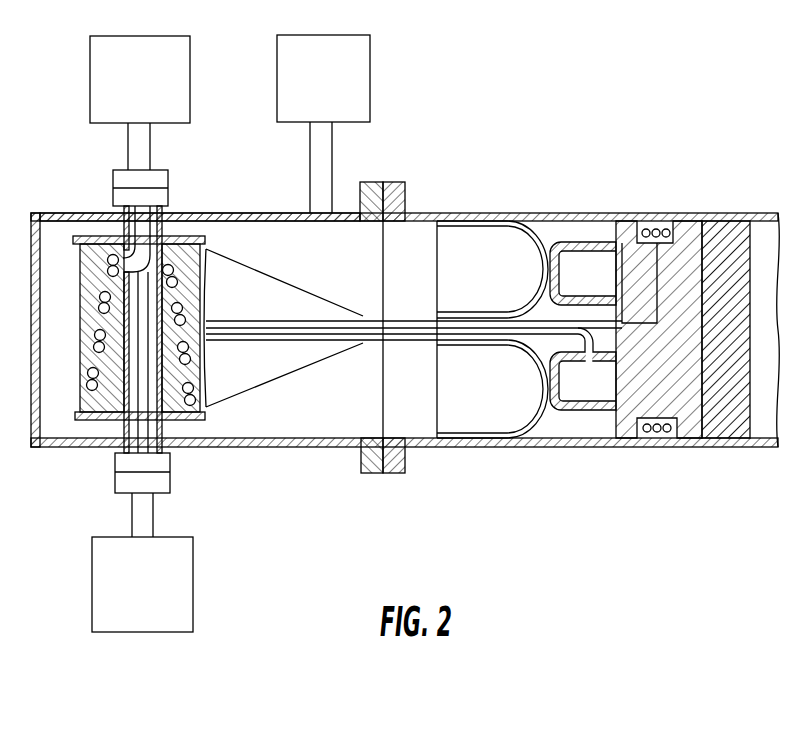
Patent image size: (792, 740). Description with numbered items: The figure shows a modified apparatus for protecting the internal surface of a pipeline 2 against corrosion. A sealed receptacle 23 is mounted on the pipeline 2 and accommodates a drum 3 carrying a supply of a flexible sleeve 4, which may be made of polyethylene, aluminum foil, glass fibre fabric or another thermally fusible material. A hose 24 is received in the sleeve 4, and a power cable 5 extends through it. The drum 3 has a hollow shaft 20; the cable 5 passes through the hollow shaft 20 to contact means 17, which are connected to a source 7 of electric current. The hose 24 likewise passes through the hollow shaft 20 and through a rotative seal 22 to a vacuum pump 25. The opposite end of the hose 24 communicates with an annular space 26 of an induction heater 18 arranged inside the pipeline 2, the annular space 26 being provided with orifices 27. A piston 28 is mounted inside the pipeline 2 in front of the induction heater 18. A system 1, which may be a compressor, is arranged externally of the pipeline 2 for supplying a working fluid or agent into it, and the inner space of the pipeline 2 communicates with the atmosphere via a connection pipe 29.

The system for supplying a working fluid 1 is at (140, 103).
The pipeline 2 is at (478, 213).
The drum 3 is at (205, 415).
The flexible sleeve 4 is at (247, 276).
The power cable 5 is at (409, 323).
The source of electric current 7 is at (584, 246).
The contact means 17 is at (113, 196).
The induction heater 18 is at (628, 427).
The hollow shaft 20 is at (166, 432).
The rotative seal 22 is at (115, 466).
The sealed receptacle 23 is at (220, 213).
The hose 24 is at (588, 381).
The vacuum pump 25 is at (142, 562).
The annular space 26 is at (602, 398).
The orifices 27 is at (653, 268).
The piston 28 is at (727, 221).
The connection pipe 29 is at (341, 254).